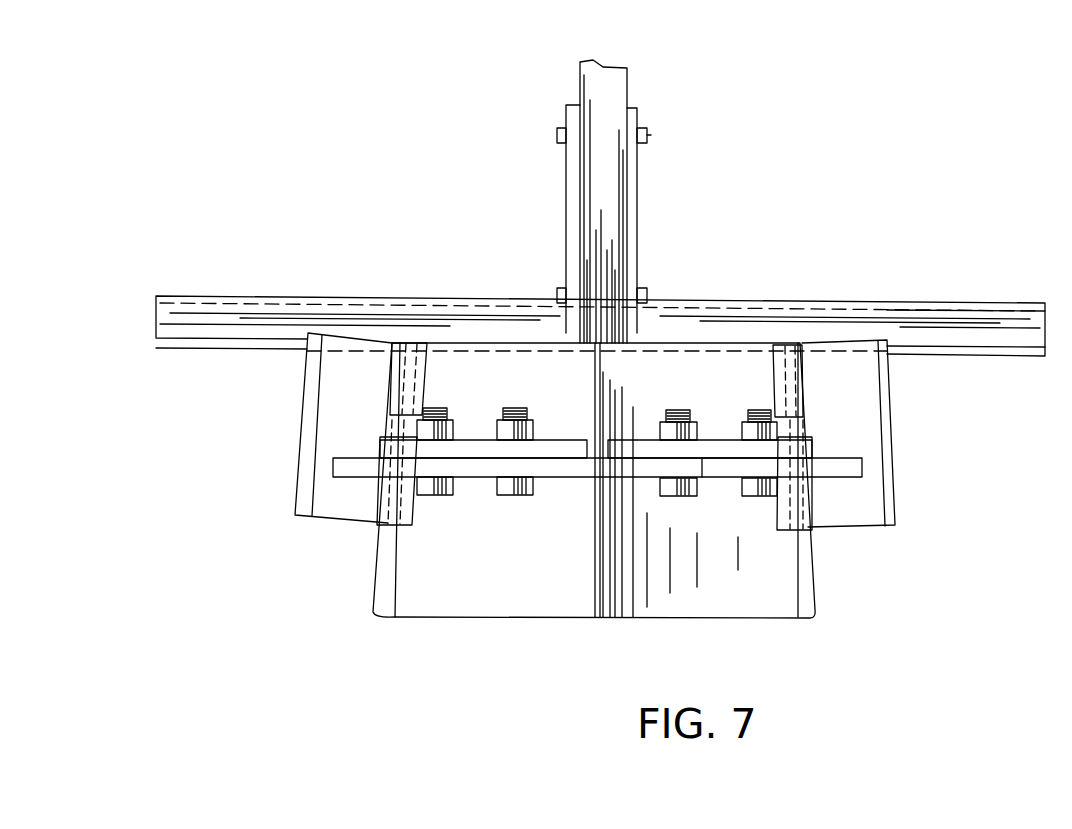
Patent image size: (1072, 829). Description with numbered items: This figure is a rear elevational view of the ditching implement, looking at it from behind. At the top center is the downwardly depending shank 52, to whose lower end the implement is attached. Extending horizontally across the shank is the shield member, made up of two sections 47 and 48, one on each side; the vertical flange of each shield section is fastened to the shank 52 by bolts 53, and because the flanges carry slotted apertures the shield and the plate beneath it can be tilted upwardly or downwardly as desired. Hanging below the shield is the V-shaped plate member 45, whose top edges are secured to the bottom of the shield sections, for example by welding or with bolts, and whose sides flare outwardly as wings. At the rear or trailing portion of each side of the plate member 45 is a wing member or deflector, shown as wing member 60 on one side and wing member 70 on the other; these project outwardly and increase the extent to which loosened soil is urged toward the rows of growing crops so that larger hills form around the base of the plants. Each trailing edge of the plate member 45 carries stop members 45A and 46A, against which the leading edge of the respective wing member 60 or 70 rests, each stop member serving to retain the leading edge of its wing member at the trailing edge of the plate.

The V-shaped plate member 45 is at (493, 600).
The stop member 45A is at (782, 362).
The stop member 46A is at (424, 345).
The shield section 47 is at (901, 320).
The shield section 48 is at (160, 318).
The shank 52 is at (605, 72).
The bolt 53 is at (558, 135).
The wing member 60 is at (890, 465).
The wing member 70 is at (303, 462).